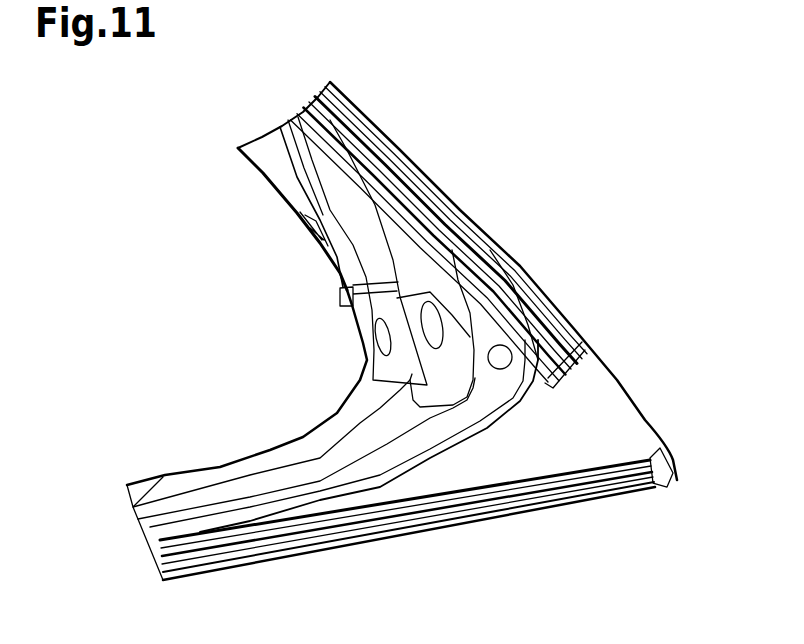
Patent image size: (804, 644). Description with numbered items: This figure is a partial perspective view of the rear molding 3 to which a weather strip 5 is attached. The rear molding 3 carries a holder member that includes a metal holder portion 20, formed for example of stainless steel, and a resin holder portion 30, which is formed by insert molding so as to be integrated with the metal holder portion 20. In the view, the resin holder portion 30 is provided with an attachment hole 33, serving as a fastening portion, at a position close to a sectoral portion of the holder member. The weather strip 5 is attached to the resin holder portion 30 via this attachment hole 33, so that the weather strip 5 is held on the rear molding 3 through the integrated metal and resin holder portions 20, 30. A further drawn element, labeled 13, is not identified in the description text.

The rear molding 3 is at (578, 265).
The weather strip 5 is at (303, 493).
The front pillar outer panel 13 is at (592, 420).
The metal holder portion 20 is at (367, 210).
The resin holder portion 30 is at (425, 265).
The attachment hole 33 is at (540, 298).